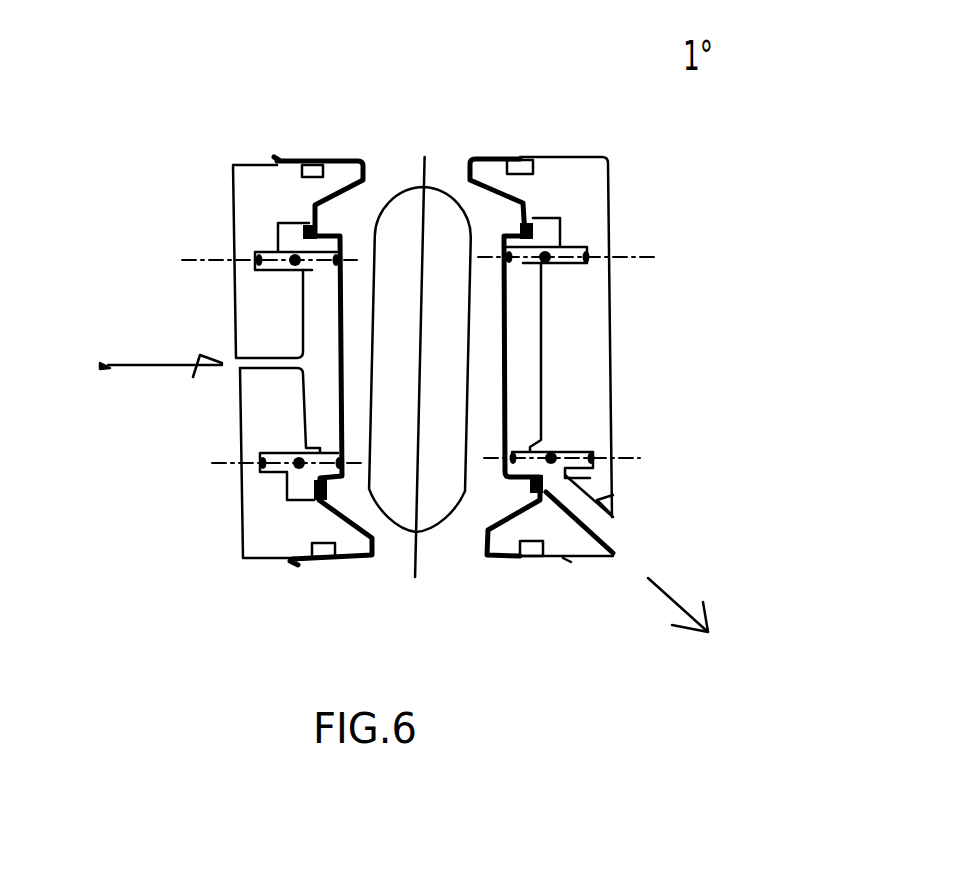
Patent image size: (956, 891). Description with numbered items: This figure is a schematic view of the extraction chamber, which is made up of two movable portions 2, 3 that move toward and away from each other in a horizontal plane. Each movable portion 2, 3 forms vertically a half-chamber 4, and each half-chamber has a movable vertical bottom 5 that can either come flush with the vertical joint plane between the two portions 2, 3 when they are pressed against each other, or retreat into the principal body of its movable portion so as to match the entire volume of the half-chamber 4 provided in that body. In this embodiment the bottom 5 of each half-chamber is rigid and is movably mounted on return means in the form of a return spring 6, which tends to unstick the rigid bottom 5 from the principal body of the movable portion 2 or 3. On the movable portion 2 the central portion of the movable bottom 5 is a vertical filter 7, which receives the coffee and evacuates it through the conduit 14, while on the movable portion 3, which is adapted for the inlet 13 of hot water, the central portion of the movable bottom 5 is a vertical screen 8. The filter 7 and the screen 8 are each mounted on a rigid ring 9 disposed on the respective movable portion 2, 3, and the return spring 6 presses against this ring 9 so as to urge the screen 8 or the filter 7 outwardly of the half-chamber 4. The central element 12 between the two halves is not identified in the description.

The movable portion 2 is at (570, 183).
The movable portion 3 is at (257, 188).
The half-chamber 4 is at (495, 217).
The movable bottom 5 is at (503, 310).
The return spring 6 is at (300, 462).
The filter 7 is at (507, 352).
The screen 8 is at (343, 413).
The rigid ring 9 is at (330, 240).
The central blade 12 is at (432, 233).
The inlet 13 is at (108, 365).
The conduit 14 is at (597, 500).